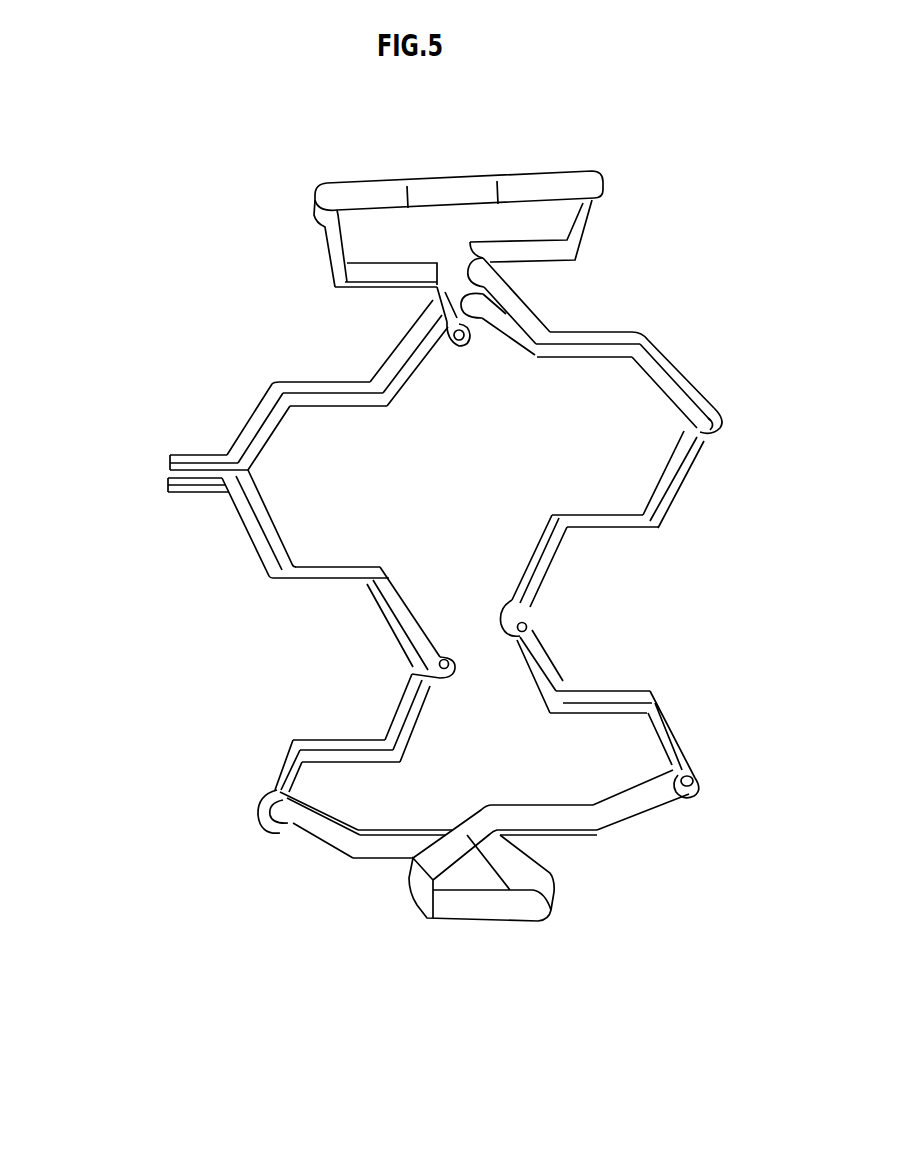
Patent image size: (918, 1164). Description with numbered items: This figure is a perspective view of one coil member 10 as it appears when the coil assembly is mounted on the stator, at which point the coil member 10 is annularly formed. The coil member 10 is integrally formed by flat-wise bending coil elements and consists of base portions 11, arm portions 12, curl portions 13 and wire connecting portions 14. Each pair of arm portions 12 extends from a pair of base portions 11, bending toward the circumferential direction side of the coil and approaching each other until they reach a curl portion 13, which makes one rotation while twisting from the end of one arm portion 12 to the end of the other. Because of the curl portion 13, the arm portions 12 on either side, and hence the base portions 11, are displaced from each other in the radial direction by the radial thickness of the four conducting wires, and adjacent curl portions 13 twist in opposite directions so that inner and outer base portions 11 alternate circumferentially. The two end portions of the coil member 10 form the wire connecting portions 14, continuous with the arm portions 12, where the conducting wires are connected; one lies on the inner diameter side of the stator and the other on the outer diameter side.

The coil member 10 is at (198, 227).
The base portion 11 is at (425, 190).
The arm portion 12 is at (375, 190).
The curl portion 13 is at (603, 187).
The wire connecting portion 14 is at (172, 468).